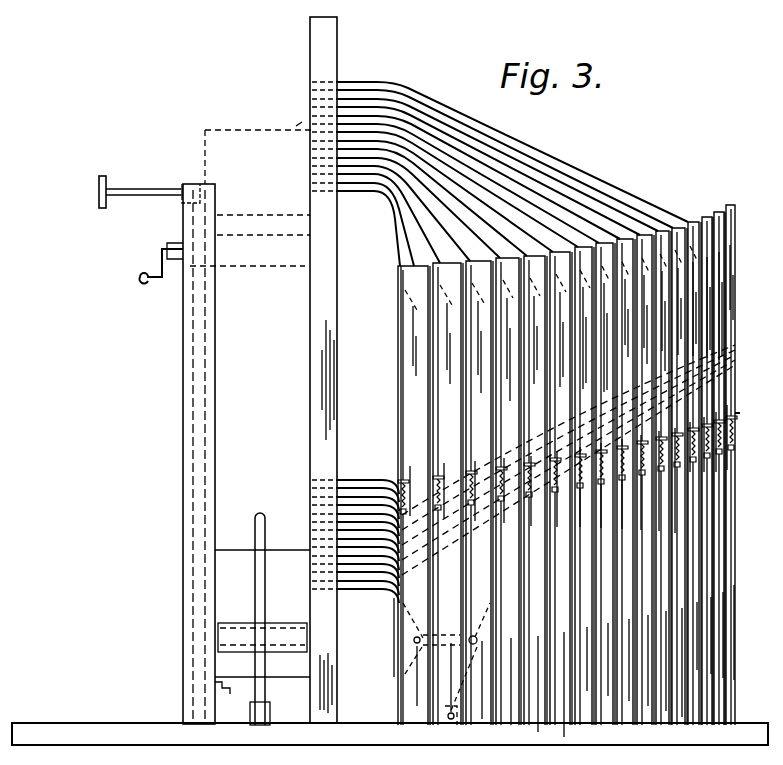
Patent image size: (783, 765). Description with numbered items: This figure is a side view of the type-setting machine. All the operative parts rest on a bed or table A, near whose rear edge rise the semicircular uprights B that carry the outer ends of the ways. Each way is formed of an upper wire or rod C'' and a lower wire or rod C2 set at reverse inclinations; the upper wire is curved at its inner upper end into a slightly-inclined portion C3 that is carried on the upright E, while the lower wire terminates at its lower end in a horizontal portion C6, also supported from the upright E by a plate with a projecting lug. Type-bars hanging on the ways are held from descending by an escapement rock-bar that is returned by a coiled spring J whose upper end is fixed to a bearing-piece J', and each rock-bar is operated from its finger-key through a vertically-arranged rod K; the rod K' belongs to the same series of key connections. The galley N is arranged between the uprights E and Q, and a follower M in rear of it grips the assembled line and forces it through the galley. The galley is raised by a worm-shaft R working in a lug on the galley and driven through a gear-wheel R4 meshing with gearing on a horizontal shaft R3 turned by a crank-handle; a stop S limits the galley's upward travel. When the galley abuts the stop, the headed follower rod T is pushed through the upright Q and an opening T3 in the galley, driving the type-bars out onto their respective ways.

The bed or table A is at (390, 718).
The uprights B is at (737, 415).
The lower wire or rod C2 is at (625, 384).
The slightly-inclined portion C3 is at (369, 84).
The upper wire or rod C'' is at (570, 157).
The horizontal portion C6 is at (368, 530).
The upright E is at (310, 415).
The coiled spring J is at (567, 467).
The bearing-piece J' is at (627, 437).
The vertically-arranged rod K is at (545, 471).
The key plate K' is at (749, 550).
The follower or plunger M is at (394, 645).
The galley N is at (262, 450).
The upright Q is at (246, 454).
The worm-shaft R is at (190, 430).
The horizontal shaft R3 is at (181, 246).
The gear-wheel R4 is at (150, 276).
The stop S is at (290, 124).
The follower T is at (141, 187).
The opening T3 is at (187, 182).